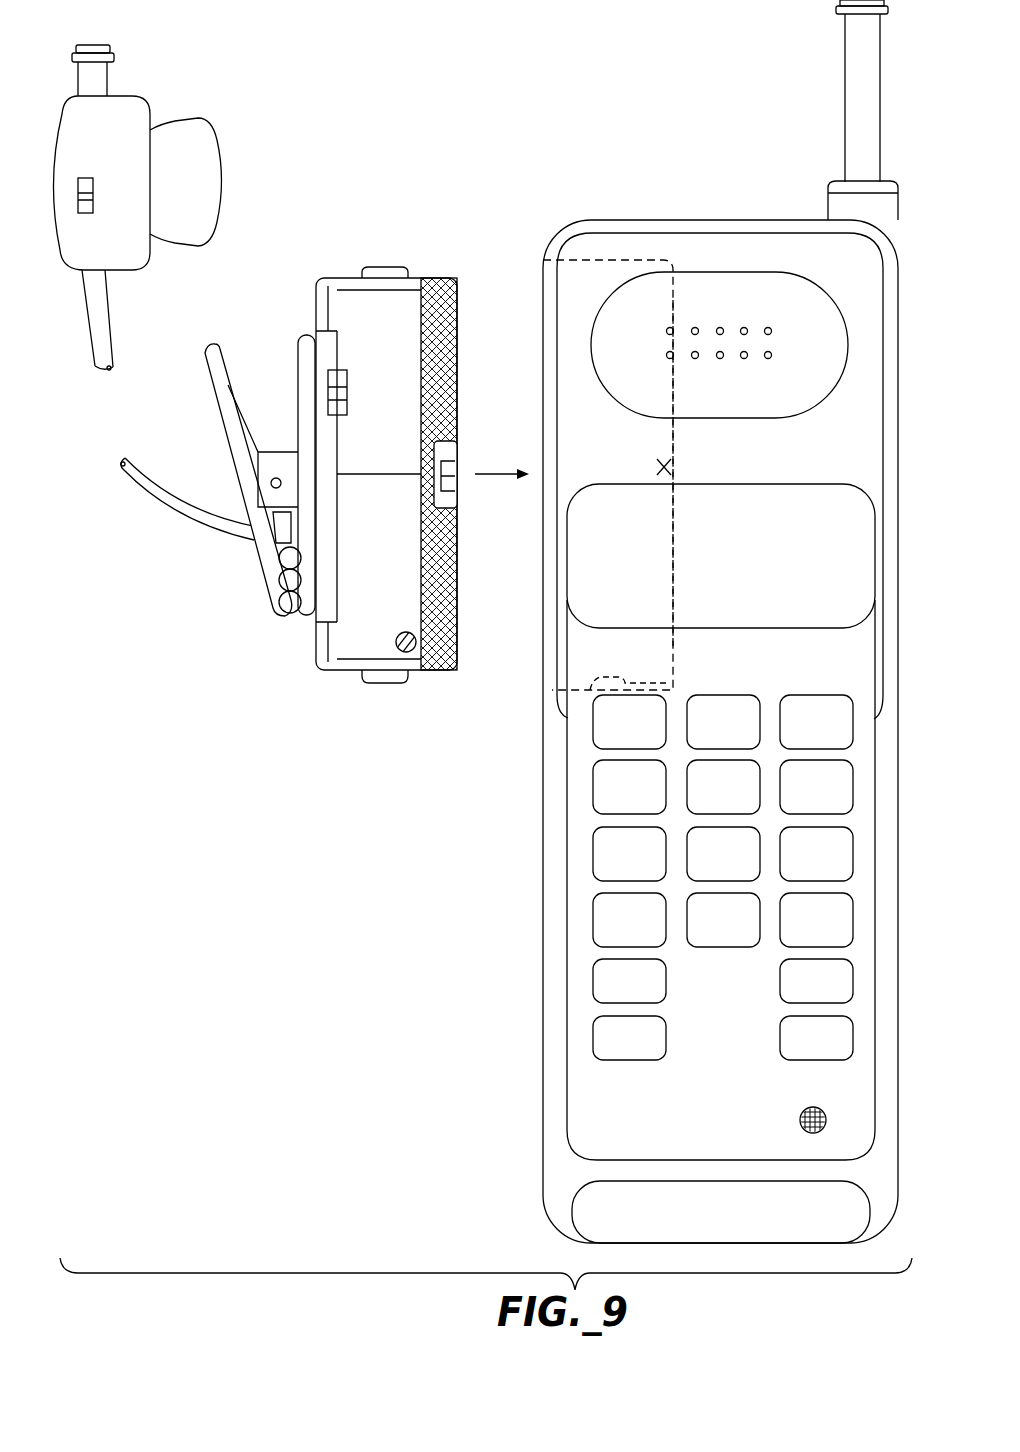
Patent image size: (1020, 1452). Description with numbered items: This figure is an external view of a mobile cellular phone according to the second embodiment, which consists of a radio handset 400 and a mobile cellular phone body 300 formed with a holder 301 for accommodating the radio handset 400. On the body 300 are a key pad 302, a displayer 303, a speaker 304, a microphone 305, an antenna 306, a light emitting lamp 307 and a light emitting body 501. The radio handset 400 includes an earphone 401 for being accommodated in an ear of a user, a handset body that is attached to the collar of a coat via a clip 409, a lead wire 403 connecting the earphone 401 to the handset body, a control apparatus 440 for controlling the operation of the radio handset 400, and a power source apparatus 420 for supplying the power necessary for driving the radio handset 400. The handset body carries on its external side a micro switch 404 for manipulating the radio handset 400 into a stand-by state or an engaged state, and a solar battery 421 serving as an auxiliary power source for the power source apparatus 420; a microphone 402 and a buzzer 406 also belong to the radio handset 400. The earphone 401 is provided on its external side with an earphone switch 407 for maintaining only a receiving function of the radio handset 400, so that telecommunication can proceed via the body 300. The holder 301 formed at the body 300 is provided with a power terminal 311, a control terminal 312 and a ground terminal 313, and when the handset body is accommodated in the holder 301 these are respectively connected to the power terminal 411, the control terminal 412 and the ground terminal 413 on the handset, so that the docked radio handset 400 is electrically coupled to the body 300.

The mobile cellular phone body 300 is at (678, 621).
The holder 301 is at (674, 563).
The key pad 302 is at (738, 695).
The displayer 303 is at (765, 495).
The speaker 304 is at (768, 328).
The microphone 305 is at (810, 1108).
The antenna 306 is at (850, 92).
The light emitting lamp 307 is at (830, 182).
The power terminal 311 is at (580, 261).
The control terminal 312 is at (661, 460).
The ground terminal 313 is at (625, 678).
The radio handset 400 is at (294, 475).
The earphone 401 is at (113, 102).
The microphone 402 is at (380, 475).
The lead wire 403 is at (225, 520).
The micro switch 404 is at (336, 370).
The buzzer 406 is at (403, 631).
The earphone switch 407 is at (87, 215).
The clip 409 is at (272, 573).
The power terminal 411 is at (388, 267).
The control terminal 412 is at (456, 478).
The ground terminal 413 is at (372, 683).
The power source apparatus 420 is at (402, 557).
The solar battery 421 is at (458, 540).
The control apparatus 440 is at (408, 368).
The light emitting body 501 is at (838, 9).